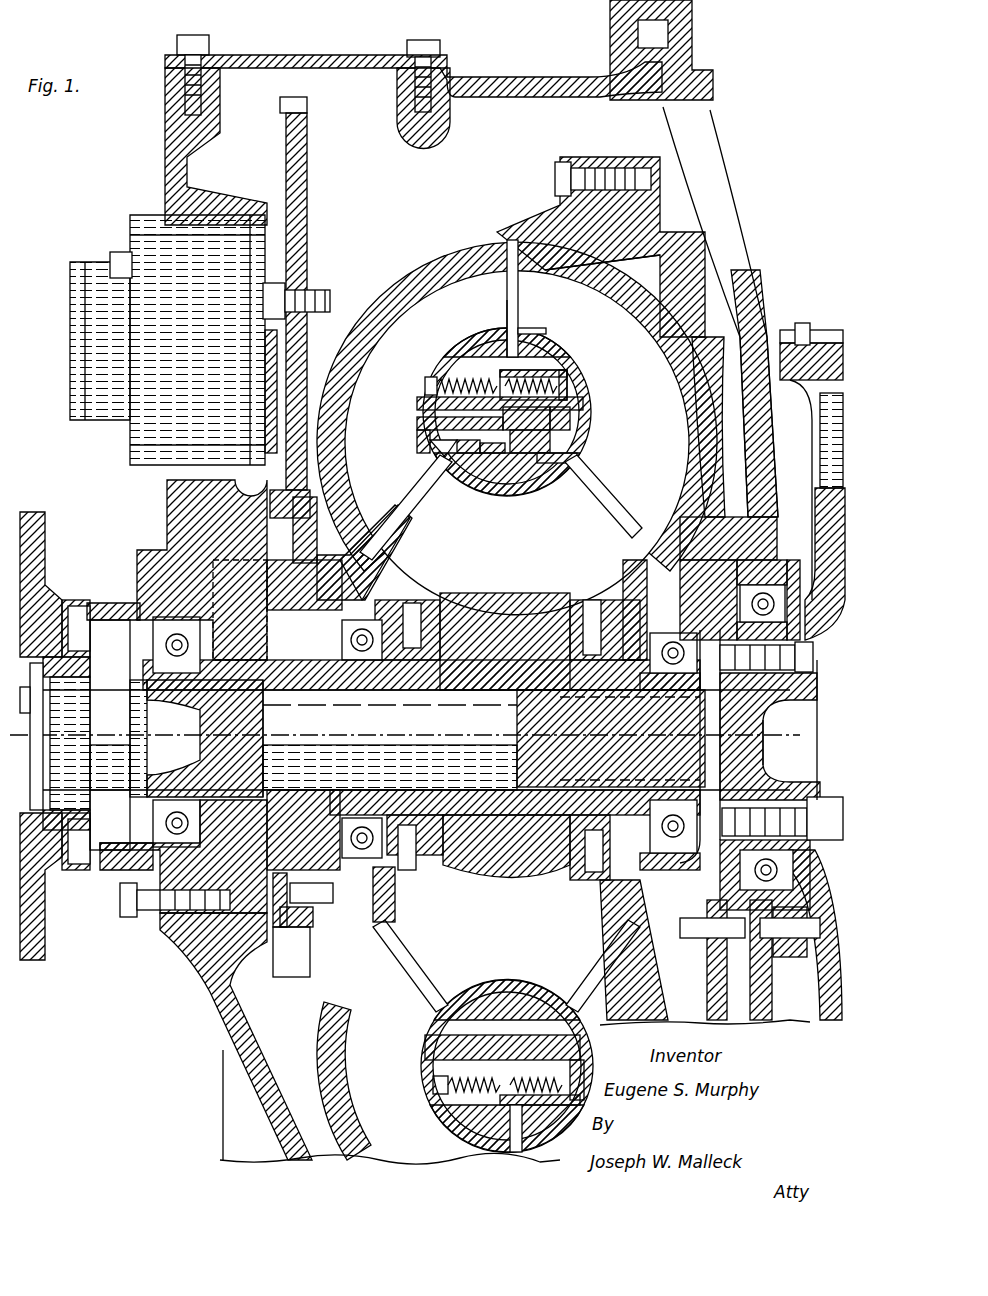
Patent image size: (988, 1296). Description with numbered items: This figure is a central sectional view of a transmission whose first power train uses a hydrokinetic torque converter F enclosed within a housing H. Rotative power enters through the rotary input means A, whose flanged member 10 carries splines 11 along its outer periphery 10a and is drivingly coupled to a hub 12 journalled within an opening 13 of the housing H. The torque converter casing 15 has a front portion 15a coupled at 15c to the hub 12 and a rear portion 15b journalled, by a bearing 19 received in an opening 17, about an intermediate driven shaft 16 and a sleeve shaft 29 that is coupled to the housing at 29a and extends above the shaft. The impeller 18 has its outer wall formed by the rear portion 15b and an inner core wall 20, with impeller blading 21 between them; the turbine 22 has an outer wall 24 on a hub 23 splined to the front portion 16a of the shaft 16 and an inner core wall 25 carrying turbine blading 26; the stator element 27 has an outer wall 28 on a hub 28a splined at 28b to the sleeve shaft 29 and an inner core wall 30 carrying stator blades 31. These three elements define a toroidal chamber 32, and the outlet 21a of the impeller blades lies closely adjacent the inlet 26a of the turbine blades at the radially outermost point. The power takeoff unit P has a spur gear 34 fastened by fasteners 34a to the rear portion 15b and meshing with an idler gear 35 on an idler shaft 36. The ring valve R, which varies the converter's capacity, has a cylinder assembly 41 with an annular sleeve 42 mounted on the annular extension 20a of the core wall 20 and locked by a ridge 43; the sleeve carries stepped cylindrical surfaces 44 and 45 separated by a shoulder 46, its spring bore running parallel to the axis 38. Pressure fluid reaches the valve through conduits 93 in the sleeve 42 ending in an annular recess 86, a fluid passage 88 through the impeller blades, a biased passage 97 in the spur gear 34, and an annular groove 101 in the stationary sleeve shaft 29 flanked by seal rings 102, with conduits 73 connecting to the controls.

The housing H is at (541, 74).
The mechanical power takeoff unit P is at (104, 221).
The hydrokinetic torque converter F is at (410, 276).
The rotary input means A is at (812, 293).
The ring valve R is at (417, 401).
The flanged member 10 is at (812, 592).
The outer periphery 10a is at (808, 325).
The splines 11 is at (838, 320).
The hub 12 is at (752, 753).
The opening 13 is at (770, 698).
The torque converter casing 15 is at (655, 208).
The front portion 15a is at (658, 278).
The rear portion 15b is at (387, 301).
The coupling 15c is at (665, 990).
The intermediate driven shaft 16 is at (400, 732).
The front portion of intermediate shaft 16a is at (693, 730).
The opening 17 is at (425, 900).
The impeller 18 is at (548, 331).
The bearing 19 is at (385, 826).
The inner core wall 20 is at (445, 355).
The annular extension 20a is at (445, 470).
The impeller blading 21 is at (380, 455).
The outlet of impeller blades 21a is at (505, 311).
The turbine 22 is at (698, 441).
The hub 23 is at (610, 826).
The outer wall 24 is at (632, 325).
The inner core wall 25 is at (592, 432).
The turbine blading 26 is at (636, 415).
The inlet of turbine blades 26a is at (520, 322).
The stator element 27 is at (600, 505).
The outer wall 28 is at (522, 595).
The hub 28a is at (450, 690).
The spline connection 28b is at (505, 690).
The sleeve shaft 29 is at (480, 800).
The coupling 29a is at (210, 915).
The inner core wall 30 is at (552, 472).
The stator blades 31 is at (484, 556).
The toroidal chamber 32 is at (606, 520).
The spur gear 34 is at (282, 552).
The fasteners 34a is at (395, 905).
The idler gear 35 is at (303, 352).
The idler shaft 36 is at (300, 284).
The axis of rotation 38 is at (191, 735).
The cylinder assembly 41 is at (508, 458).
The annular sleeve 42 is at (524, 460).
The ridge 43 is at (478, 472).
The stepped cylindrical surface 44 is at (417, 423).
The stepped cylindrical surface 45 is at (578, 458).
The shoulder 46 is at (478, 398).
The conduits 73 is at (228, 968).
The annular recess 86 is at (430, 446).
The fluid passage 88 is at (435, 480).
The conduits 93 is at (493, 458).
The biased passage 97 is at (265, 588).
The annular groove 101 is at (290, 692).
The seal rings 102 is at (266, 680).